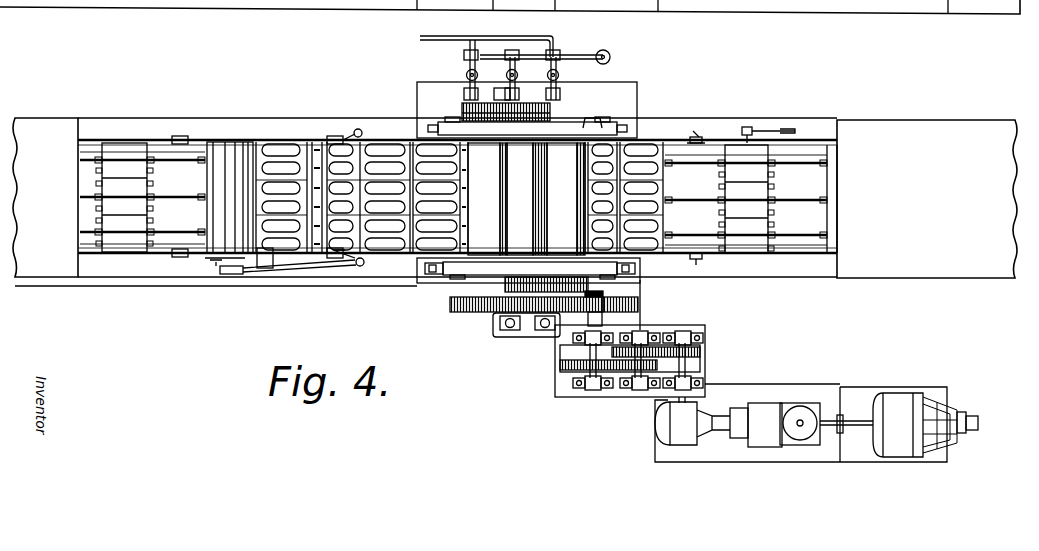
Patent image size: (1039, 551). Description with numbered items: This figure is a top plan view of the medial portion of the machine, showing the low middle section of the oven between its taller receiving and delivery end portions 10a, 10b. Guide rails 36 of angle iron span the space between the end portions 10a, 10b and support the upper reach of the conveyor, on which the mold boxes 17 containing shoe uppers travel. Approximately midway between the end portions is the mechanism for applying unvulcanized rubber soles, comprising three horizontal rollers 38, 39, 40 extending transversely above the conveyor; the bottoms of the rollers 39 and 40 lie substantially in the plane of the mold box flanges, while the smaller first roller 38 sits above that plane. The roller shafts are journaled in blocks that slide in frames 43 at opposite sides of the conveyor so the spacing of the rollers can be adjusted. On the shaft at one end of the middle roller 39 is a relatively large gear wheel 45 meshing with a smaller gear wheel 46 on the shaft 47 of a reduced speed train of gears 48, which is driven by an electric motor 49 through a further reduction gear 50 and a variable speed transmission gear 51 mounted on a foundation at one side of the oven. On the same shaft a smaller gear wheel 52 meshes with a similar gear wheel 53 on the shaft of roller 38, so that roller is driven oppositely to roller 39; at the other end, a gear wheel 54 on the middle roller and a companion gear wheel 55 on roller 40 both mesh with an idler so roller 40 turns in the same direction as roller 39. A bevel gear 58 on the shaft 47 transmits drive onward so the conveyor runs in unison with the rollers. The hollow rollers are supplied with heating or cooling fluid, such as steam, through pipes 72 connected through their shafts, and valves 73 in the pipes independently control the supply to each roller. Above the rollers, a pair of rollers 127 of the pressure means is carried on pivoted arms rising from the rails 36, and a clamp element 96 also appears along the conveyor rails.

The receiving end portion 10a is at (45, 197).
The delivery end portion 10b is at (927, 199).
The mold box 17 is at (435, 198).
The roller 127 is at (238, 147).
The clamp 96 is at (322, 146).
The rail 36 is at (680, 150).
The roller 40 is at (487, 199).
The middle roller 39 is at (527, 199).
The roller 38 is at (566, 199).
The companion gear wheel 55 is at (462, 108).
The gear wheel 54 is at (527, 120).
The frame 43 is at (585, 129).
The pipe 72 is at (515, 67).
The valve 73 is at (571, 75).
The gear wheel 52 is at (515, 278).
The gear wheel 53 is at (565, 274).
The bevel gear 58 is at (603, 294).
The large gear wheel 45 is at (477, 312).
The gear wheel 46 is at (638, 306).
The shaft 47 is at (600, 318).
The reduced speed train of gears 48 is at (670, 362).
The reduction gear 50 is at (740, 438).
The variable speed transmission gear 51 is at (797, 411).
The electric motor 49 is at (895, 397).